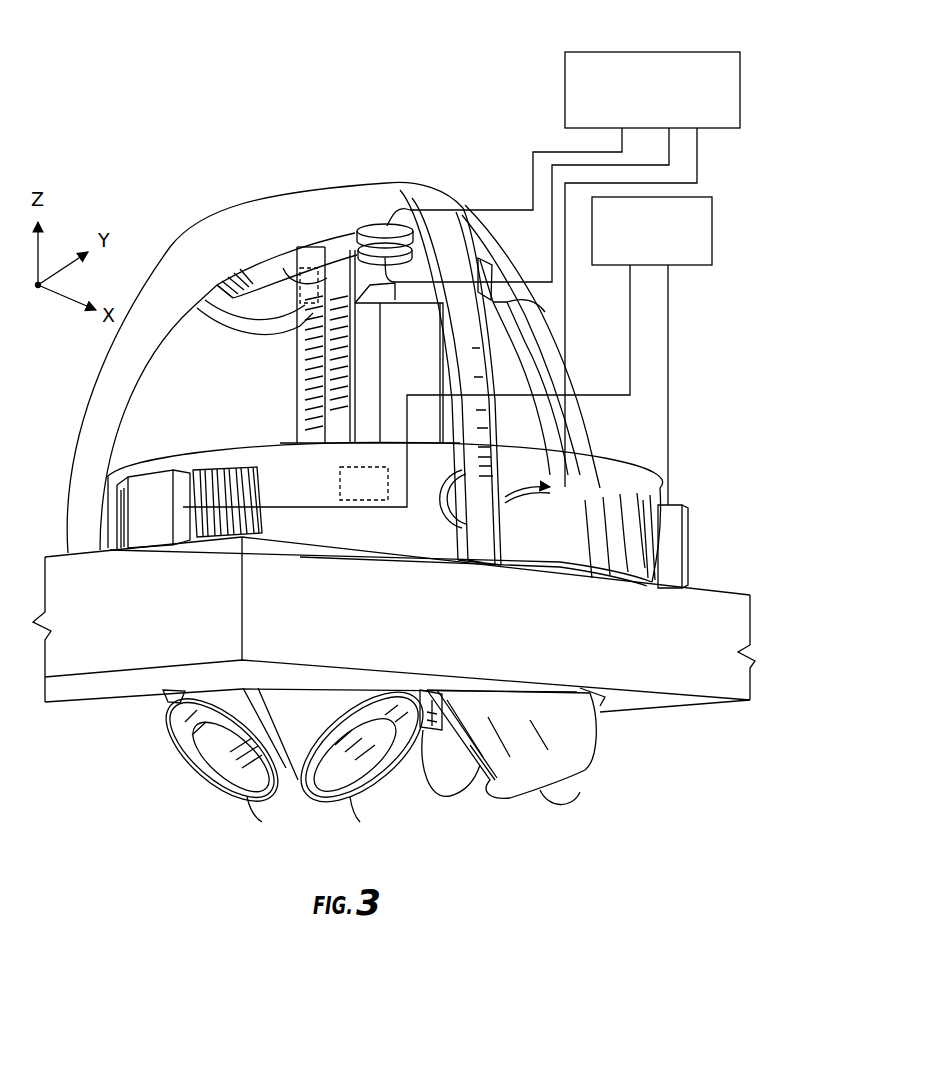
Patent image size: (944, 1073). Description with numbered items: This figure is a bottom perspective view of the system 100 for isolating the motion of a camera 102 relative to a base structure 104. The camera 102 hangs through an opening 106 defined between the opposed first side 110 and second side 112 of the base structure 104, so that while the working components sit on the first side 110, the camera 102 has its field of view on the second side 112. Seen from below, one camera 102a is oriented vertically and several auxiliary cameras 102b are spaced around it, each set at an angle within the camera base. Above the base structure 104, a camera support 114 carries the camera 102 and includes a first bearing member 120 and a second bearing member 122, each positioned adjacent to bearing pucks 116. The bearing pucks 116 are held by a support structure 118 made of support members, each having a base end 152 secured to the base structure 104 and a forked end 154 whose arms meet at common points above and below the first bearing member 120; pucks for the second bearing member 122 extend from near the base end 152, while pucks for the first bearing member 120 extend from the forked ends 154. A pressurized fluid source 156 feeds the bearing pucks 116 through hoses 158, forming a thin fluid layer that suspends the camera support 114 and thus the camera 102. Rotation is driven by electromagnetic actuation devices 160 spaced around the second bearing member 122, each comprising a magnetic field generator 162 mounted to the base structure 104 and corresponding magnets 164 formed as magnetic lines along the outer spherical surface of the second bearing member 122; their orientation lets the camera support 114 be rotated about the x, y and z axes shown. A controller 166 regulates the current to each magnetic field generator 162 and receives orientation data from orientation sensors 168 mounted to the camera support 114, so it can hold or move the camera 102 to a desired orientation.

The system 100 is at (193, 102).
The camera 102 is at (347, 772).
The vertically oriented camera 102a is at (435, 794).
The auxiliary camera 102b is at (560, 784).
The base structure 104 is at (63, 577).
The opening 106 is at (180, 700).
The first side 110 is at (727, 594).
The second side 112 is at (673, 702).
The camera support 114 is at (247, 412).
The bearing puck 116 is at (368, 238).
The support structure 118 is at (93, 423).
The first bearing member 120 is at (278, 277).
The second bearing member 122 is at (598, 542).
The base end 152 is at (80, 536).
The forked end 154 is at (190, 293).
The pressurized fluid source 156 is at (741, 78).
The hose 158 is at (383, 185).
The electromagnetic actuation device 160 is at (150, 525).
The magnetic field generator 162 is at (182, 534).
The magnet 164 is at (258, 490).
The controller 166 is at (713, 225).
The orientation sensor 168 is at (310, 307).